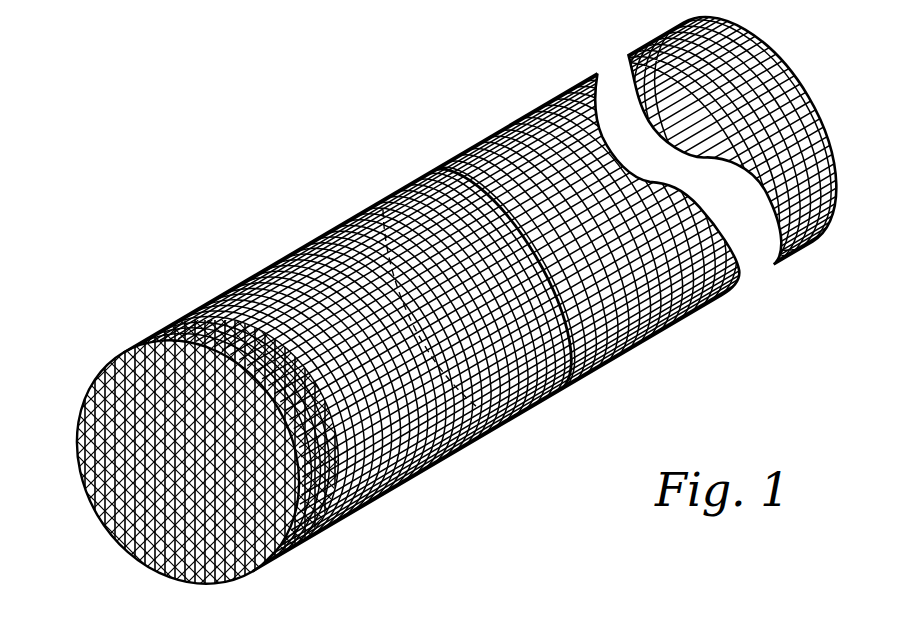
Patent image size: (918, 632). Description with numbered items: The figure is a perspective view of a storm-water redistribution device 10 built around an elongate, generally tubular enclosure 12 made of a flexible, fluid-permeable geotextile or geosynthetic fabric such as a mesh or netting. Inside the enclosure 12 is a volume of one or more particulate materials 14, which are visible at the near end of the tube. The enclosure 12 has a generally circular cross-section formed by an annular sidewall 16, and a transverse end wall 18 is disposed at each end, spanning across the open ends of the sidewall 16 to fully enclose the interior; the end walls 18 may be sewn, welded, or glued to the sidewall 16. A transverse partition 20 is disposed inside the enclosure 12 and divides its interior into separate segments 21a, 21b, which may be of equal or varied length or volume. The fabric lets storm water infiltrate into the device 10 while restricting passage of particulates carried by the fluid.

The storm-water redistribution device 10 is at (168, 163).
The tubular enclosure 12 is at (297, 246).
The particulate materials 14 is at (167, 567).
The annular sidewall 16 is at (361, 212).
The transverse end wall 18 is at (82, 395).
The transverse partition 20 is at (515, 269).
The segment 21a is at (364, 358).
The segment 21b is at (630, 202).